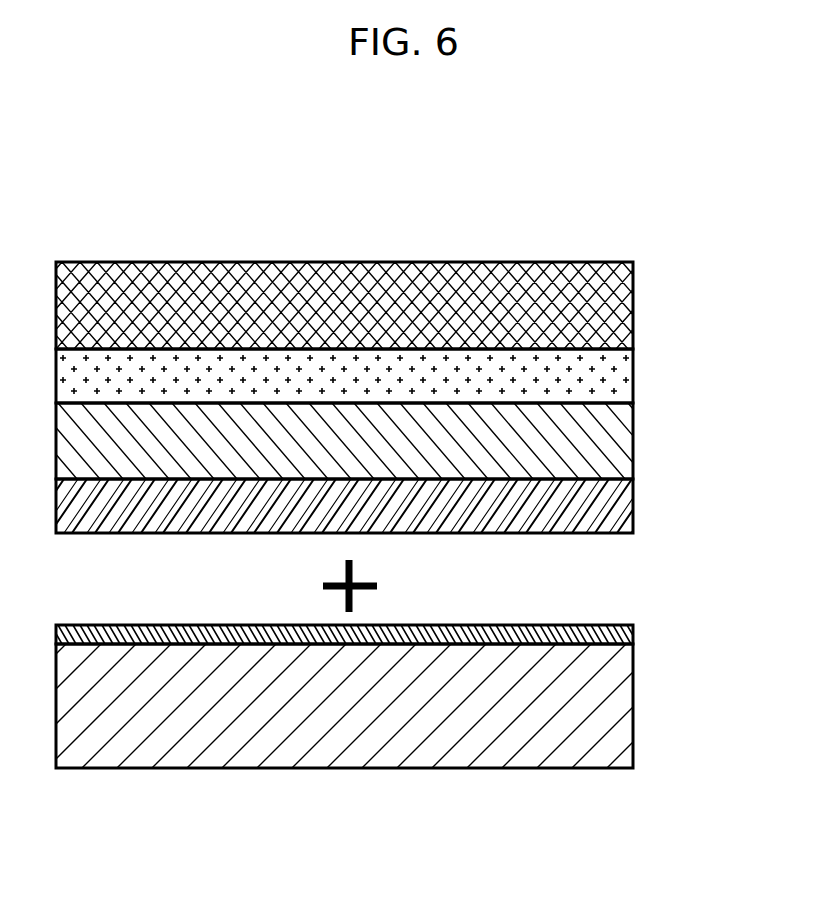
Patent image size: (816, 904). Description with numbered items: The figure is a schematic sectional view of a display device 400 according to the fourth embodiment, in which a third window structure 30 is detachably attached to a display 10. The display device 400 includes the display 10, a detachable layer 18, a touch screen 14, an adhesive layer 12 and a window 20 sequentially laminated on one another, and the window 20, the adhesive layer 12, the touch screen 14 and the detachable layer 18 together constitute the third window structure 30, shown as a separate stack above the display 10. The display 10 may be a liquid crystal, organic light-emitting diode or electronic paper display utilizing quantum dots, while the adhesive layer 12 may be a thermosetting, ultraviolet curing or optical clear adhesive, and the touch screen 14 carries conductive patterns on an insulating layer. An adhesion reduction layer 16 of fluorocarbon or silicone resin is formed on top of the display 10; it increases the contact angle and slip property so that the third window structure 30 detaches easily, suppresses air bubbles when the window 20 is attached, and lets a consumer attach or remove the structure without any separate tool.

The display device 400 is at (83, 191).
The third window structure 30 is at (381, 397).
The window 20 is at (630, 305).
The adhesive layer 12 is at (630, 381).
The touch screen 14 is at (626, 444).
The detachable layer 18 is at (362, 506).
The adhesion reduction layer 16 is at (630, 636).
The display 10 is at (627, 706).